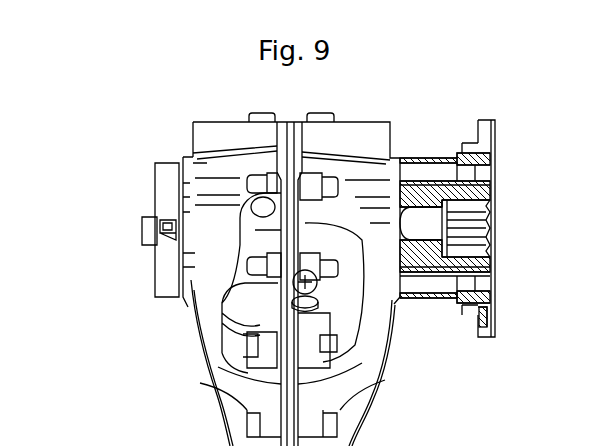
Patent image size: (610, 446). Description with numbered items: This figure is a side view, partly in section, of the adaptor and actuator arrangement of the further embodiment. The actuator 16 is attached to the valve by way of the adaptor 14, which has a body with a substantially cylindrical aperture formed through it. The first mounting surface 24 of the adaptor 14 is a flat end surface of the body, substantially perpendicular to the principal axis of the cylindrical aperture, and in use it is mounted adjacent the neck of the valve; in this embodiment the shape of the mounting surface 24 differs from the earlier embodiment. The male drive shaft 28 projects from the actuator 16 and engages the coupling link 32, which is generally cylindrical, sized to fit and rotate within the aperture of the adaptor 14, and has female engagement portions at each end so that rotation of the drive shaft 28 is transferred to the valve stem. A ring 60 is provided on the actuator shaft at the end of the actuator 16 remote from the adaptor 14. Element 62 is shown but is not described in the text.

The adaptor 14 is at (430, 334).
The actuator 16 is at (209, 122).
The first mounting surface 24 is at (504, 175).
The drive shaft 28 is at (418, 225).
The coupling link 32 is at (495, 237).
The ring 60 is at (155, 163).
The bearing 62 is at (490, 275).